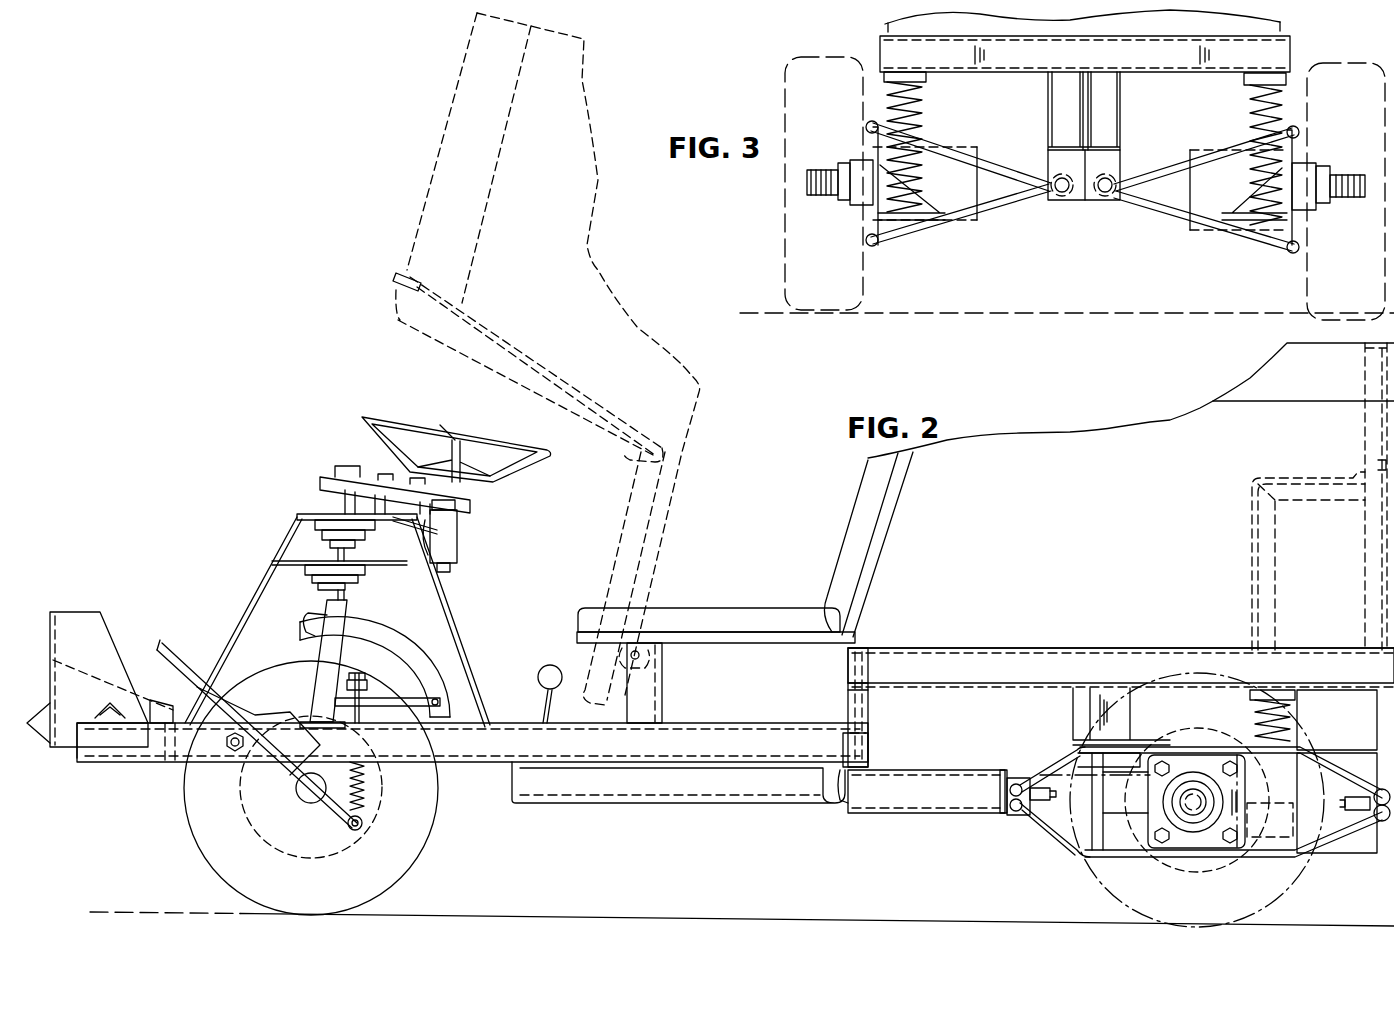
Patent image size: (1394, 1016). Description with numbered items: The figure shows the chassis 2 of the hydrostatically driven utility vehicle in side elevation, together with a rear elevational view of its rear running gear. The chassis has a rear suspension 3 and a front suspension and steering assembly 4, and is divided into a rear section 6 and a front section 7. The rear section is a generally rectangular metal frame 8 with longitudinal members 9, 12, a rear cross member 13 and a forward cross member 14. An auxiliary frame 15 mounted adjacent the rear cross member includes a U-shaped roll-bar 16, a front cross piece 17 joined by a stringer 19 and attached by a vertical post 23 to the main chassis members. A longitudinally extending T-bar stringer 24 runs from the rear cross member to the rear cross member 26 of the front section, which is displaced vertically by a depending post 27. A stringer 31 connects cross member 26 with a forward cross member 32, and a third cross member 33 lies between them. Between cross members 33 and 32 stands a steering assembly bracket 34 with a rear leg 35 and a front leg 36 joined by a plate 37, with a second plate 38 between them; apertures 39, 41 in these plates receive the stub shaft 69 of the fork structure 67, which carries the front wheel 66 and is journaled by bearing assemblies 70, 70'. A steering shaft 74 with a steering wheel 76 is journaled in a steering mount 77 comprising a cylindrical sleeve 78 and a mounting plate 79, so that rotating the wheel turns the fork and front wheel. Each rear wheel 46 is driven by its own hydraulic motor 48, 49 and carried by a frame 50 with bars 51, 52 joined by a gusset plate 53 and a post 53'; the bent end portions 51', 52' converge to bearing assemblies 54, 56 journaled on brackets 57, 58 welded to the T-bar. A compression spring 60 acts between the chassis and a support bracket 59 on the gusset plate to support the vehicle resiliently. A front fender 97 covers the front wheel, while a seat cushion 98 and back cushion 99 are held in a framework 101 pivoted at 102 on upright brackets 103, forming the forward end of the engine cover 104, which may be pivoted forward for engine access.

In FIG. 2, the chassis 2 is at (654, 812).
In FIG. 2, the rear suspension 3 is at (1355, 623).
In FIG. 2, the front suspension and steering assembly 4 is at (253, 528).
In FIG. 3, the rear section 6 is at (992, 76).
In FIG. 2, the rear section 6 is at (1031, 648).
In FIG. 2, the front section 7 is at (471, 764).
In FIG. 3, the metal frame 8 is at (1174, 76).
In FIG. 2, the metal frame 8 is at (959, 640).
In FIG. 3, the longitudinal member 9 is at (880, 52).
In FIG. 2, the longitudinal member 9 is at (1007, 675).
In FIG. 3, the longitudinal member 12 is at (1292, 55).
In FIG. 3, the rear cross member 13 is at (1100, 62).
In FIG. 2, the forward cross member 14 is at (845, 665).
In FIG. 2, the auxiliary frame 15 is at (1350, 460).
In FIG. 2, the roll-bar 16 is at (1372, 375).
In FIG. 2, the front cross piece 17 is at (1250, 486).
In FIG. 2, the stringer 19 is at (1325, 492).
In FIG. 2, the vertical post 23 is at (1273, 590).
In FIG. 2, the stringer 24 is at (947, 768).
In FIG. 2, the rear cross member 26 is at (876, 745).
In FIG. 2, the post 27 is at (845, 710).
In FIG. 2, the stringer 31 is at (594, 758).
In FIG. 2, the forward cross member 32 is at (162, 762).
In FIG. 2, the third cross member 33 is at (490, 748).
In FIG. 2, the steering assembly bracket 34 is at (458, 645).
In FIG. 2, the rear leg 35 is at (477, 675).
In FIG. 2, the front leg 36 is at (231, 622).
In FIG. 2, the plate 37 is at (313, 515).
In FIG. 2, the second plate 38 is at (406, 568).
In FIG. 2, the aperture 39 is at (318, 515).
In FIG. 2, the aperture 41 is at (326, 560).
In FIG. 2, the rear wheel 46 is at (1100, 888).
In FIG. 3, the hydraulic motor 48 is at (954, 191).
In FIG. 3, the hydraulic motor 49 is at (1231, 193).
In FIG. 3, the frame 50 is at (930, 232).
In FIG. 2, the frame 50 is at (1245, 875).
In FIG. 3, the bar 51 is at (1091, 164).
In FIG. 2, the bar 51 is at (1231, 749).
In FIG. 3, the end portion 51' is at (1076, 143).
In FIG. 2, the end portion 51' is at (1193, 760).
In FIG. 3, the bar 52 is at (1058, 241).
In FIG. 2, the bar 52 is at (1233, 854).
In FIG. 3, the end portion 52' is at (1086, 231).
In FIG. 2, the end portion 52' is at (1182, 854).
In FIG. 3, the gusset plate 53 is at (1083, 205).
In FIG. 2, the gusset plate 53 is at (1219, 801).
In FIG. 2, the post 53' is at (1120, 801).
In FIG. 2, the bearing assembly 54 is at (1000, 792).
In FIG. 3, the bearing assembly 56 is at (1062, 195).
In FIG. 2, the bearing assembly 56 is at (1382, 823).
In FIG. 2, the bracket 57 is at (1005, 798).
In FIG. 3, the bracket 58 is at (1052, 160).
In FIG. 2, the bracket 58 is at (1346, 805).
In FIG. 3, the support bracket 59 is at (893, 213).
In FIG. 2, the support bracket 59 is at (1264, 848).
In FIG. 3, the compression spring 60 is at (920, 115).
In FIG. 2, the compression spring 60 is at (1294, 706).
In FIG. 2, the front wheel 66 is at (412, 868).
In FIG. 2, the fork structure 67 is at (325, 648).
In FIG. 2, the stub shaft 69 is at (326, 592).
In FIG. 2, the bearing assembly 70 is at (356, 540).
In FIG. 2, the bearing assembly 70' is at (345, 589).
In FIG. 2, the steering shaft 74 is at (470, 508).
In FIG. 2, the steering wheel 76 is at (400, 425).
In FIG. 2, the steering mount 77 is at (457, 551).
In FIG. 2, the cylindrical sleeve 78 is at (462, 530).
In FIG. 2, the mounting plate 79 is at (441, 572).
In FIG. 2, the front fender 97 is at (397, 668).
In FIG. 2, the seat cushion 98 is at (742, 608).
In FIG. 2, the back cushion 99 is at (858, 516).
In FIG. 2, the framework 101 is at (890, 548).
In FIG. 2, the pivot 102 is at (641, 650).
In FIG. 2, the upright bracket 103 is at (668, 690).
In FIG. 2, the engine cover 104 is at (430, 202).